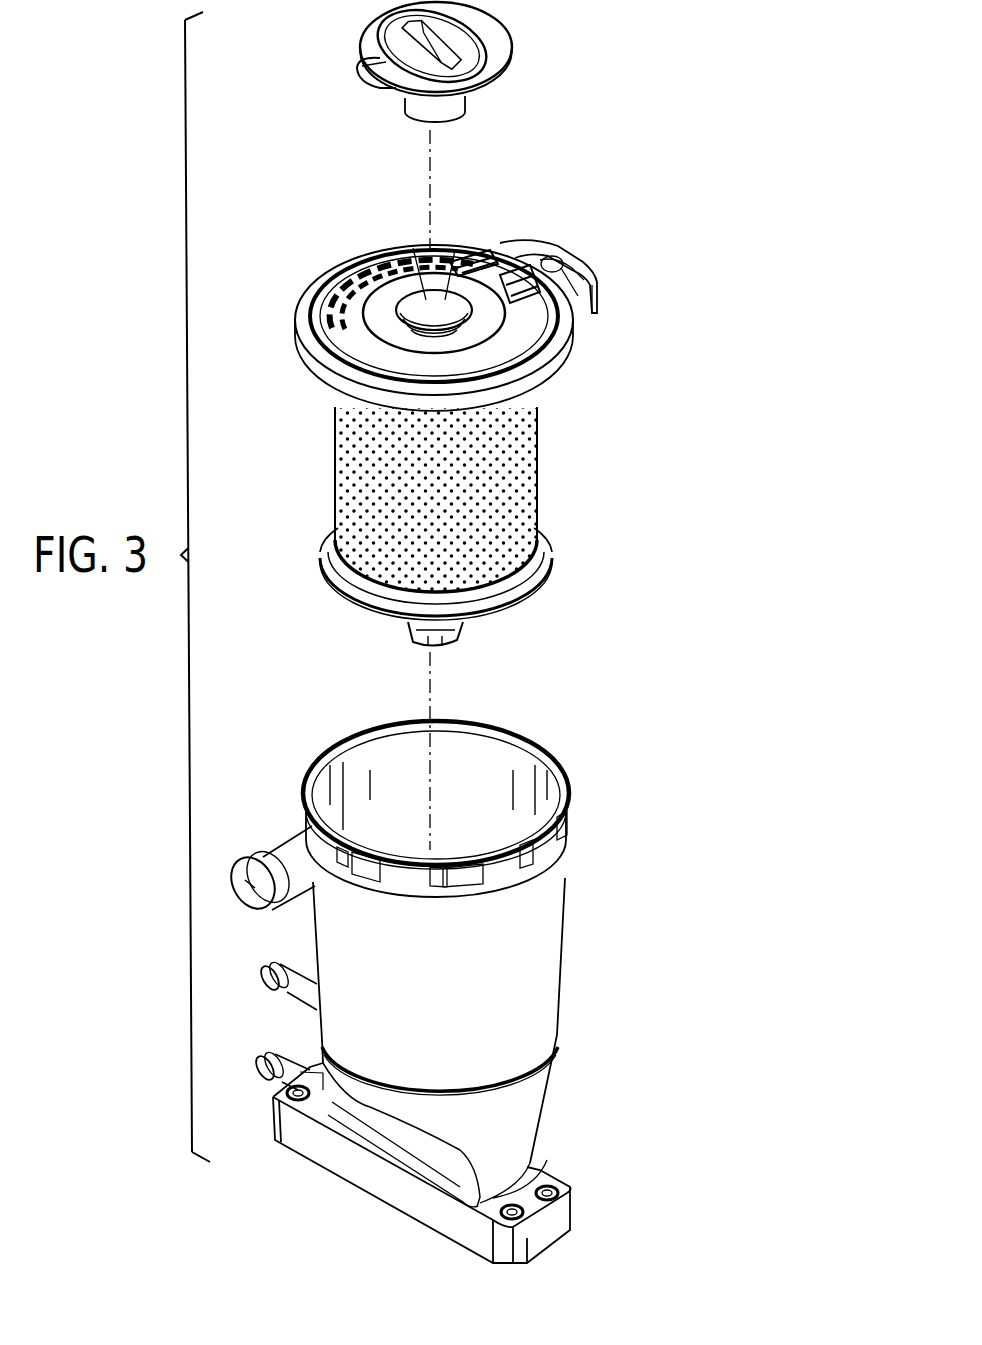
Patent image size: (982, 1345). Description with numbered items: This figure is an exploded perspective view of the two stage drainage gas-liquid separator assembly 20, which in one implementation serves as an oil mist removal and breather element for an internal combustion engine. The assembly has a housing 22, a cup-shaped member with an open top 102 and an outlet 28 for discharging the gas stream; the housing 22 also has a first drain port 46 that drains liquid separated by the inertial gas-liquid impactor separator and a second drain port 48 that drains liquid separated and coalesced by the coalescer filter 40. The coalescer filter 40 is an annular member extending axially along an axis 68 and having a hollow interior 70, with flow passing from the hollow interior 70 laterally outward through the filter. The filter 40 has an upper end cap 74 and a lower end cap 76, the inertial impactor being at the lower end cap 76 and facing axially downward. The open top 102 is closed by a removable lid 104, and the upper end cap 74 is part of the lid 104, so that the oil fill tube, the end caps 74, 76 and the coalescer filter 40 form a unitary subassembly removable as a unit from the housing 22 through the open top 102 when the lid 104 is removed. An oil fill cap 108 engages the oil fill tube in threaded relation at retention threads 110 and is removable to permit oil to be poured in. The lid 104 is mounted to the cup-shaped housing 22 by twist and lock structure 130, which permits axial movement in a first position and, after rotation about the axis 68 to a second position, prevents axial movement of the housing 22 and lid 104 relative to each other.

The two stage drainage gas-liquid separator assembly 20 is at (476, 987).
The housing 22 is at (424, 987).
The outlet 28 is at (243, 880).
The coalescer filter 40 is at (538, 475).
The first drain port 46 is at (258, 1066).
The second drain port 48 is at (265, 975).
The axis 68 is at (428, 688).
The hollow interior 70 is at (462, 262).
The upper end cap 74 is at (436, 295).
The lower end cap 76 is at (527, 578).
The open top 102 is at (528, 745).
The lid 104 is at (318, 342).
The oil fill cap 108 is at (497, 72).
The retention threads 110 is at (425, 262).
The twist and lock structure 130 is at (563, 240).